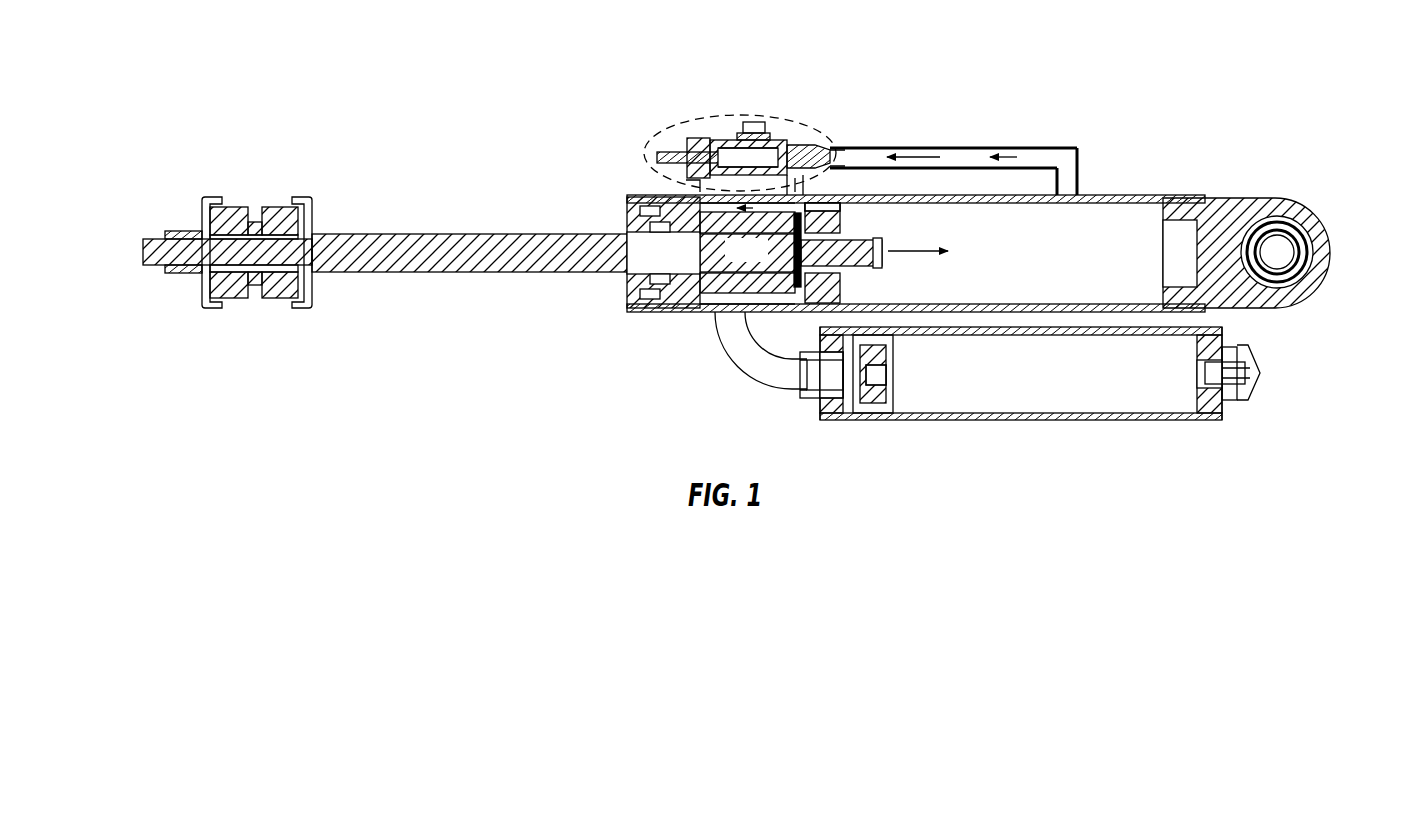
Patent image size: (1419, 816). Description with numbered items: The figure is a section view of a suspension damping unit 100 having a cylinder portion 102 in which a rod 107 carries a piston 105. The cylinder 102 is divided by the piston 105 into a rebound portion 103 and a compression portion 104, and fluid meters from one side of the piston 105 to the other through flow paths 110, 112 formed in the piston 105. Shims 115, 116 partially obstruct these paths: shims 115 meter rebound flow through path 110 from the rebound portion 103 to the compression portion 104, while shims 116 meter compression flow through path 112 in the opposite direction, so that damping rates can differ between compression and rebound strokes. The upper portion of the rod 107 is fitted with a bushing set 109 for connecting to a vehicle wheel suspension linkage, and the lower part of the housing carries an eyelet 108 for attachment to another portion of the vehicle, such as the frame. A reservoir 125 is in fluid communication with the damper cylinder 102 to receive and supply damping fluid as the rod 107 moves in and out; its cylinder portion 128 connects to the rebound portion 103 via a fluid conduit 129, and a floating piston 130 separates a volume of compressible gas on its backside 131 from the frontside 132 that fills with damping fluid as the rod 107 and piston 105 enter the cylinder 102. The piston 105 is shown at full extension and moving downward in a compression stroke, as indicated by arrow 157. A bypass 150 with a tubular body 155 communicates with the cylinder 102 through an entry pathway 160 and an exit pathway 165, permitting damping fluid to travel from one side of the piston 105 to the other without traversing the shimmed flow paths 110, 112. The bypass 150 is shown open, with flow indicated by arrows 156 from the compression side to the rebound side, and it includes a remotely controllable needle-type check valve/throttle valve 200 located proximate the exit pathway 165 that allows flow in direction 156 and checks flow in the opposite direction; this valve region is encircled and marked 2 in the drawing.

The suspension damping unit 100 is at (255, 148).
The cylinder portion 102 is at (1160, 196).
The rebound portion 103 is at (728, 313).
The compression portion 104 is at (1086, 289).
The piston 105 is at (808, 312).
The rod 107 is at (442, 245).
The eyelet 108 is at (1273, 247).
The bushing set 109 is at (287, 305).
The flow path 110 is at (822, 226).
The flow path 112 is at (822, 290).
The shims 115 is at (835, 206).
The shims 116 is at (746, 250).
The reservoir 125 is at (998, 405).
The cylinder portion 128 is at (1097, 420).
The fluid conduit 129 is at (742, 372).
The floating piston 130 is at (863, 415).
The backside 131 is at (1059, 384).
The frontside 132 is at (845, 373).
The bypass 150 is at (1097, 120).
The tubular body 155 is at (955, 147).
The arrows 156 is at (923, 147).
The arrow 157 is at (920, 255).
The entry pathway 160 is at (1100, 198).
The exit pathway 165 is at (700, 190).
The needle-type check valve/throttle valve 200 is at (740, 104).
The detail region of FIG. 2 is at (808, 115).